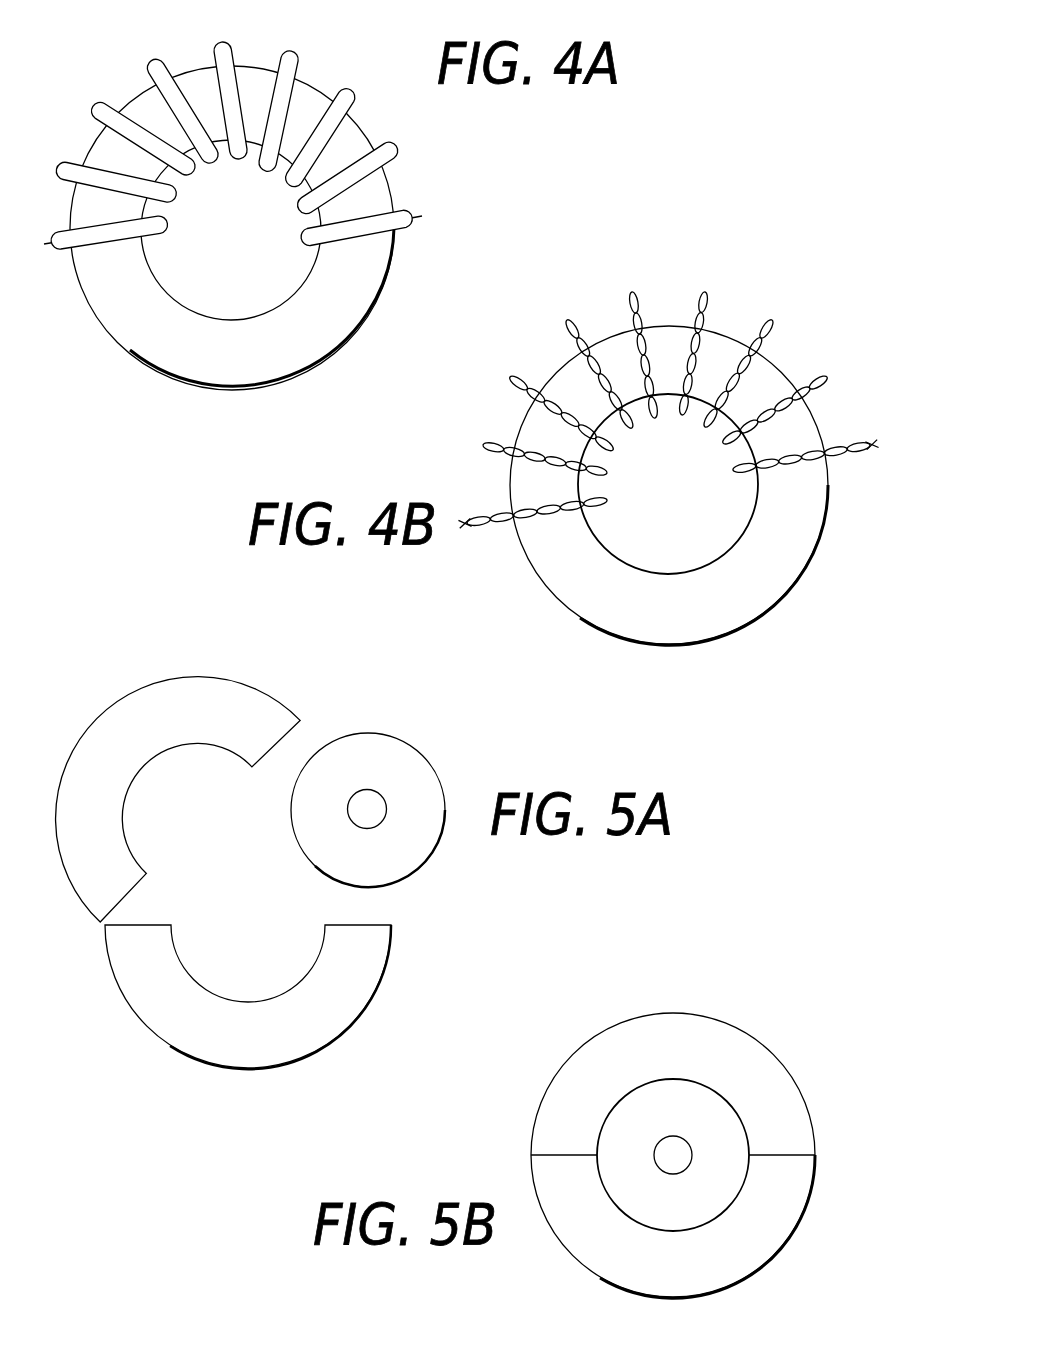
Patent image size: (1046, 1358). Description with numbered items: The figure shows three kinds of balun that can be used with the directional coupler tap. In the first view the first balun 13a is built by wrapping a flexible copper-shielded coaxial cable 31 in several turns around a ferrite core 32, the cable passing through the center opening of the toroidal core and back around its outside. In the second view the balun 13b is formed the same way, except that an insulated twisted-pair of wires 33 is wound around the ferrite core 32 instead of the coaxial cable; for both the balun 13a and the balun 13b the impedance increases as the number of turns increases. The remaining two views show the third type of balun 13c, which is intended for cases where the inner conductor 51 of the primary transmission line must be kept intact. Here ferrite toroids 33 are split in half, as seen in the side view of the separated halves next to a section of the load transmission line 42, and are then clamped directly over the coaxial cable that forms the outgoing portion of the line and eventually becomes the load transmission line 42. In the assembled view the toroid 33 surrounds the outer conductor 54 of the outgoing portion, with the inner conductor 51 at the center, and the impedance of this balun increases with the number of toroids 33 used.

In FIG. 4A, the first balun 13a is at (256, 437).
In FIG. 4B, the balun 13b is at (692, 689).
In FIG. 5B, the third type of balun 13c is at (748, 963).
In FIG. 4A, the flexible copper-shielded coaxial cable 31 is at (351, 94).
In FIG. 4A, the ferrite core 32 is at (117, 321).
In FIG. 4B, the ferrite core 32 is at (808, 537).
In FIG. 4B, the insulated twisted-pair of wires / ferrite toroids 33 is at (772, 328).
In FIG. 5A, the insulated twisted-pair of wires / ferrite toroids 33 is at (98, 716).
In FIG. 5B, the insulated twisted-pair of wires / ferrite toroids 33 is at (605, 1028).
In FIG. 5A, the load transmission line 42 is at (366, 733).
In FIG. 5B, the inner conductor 51 is at (676, 1157).
In FIG. 5B, the outer conductor 54 is at (710, 1085).